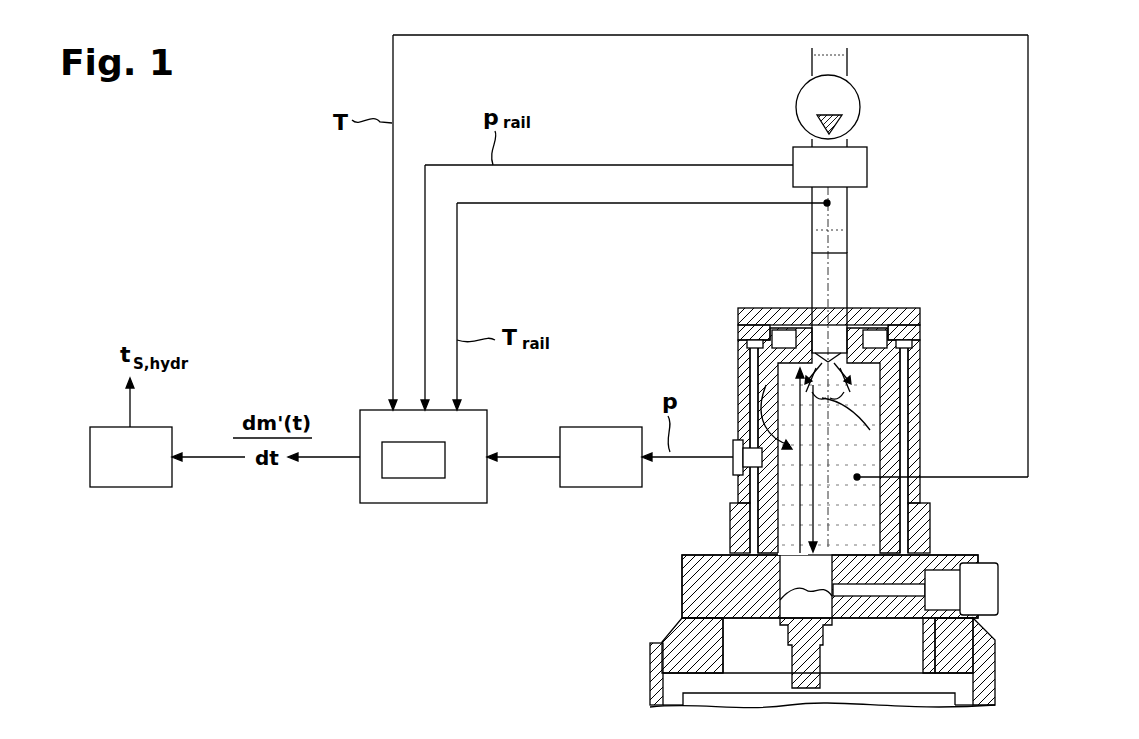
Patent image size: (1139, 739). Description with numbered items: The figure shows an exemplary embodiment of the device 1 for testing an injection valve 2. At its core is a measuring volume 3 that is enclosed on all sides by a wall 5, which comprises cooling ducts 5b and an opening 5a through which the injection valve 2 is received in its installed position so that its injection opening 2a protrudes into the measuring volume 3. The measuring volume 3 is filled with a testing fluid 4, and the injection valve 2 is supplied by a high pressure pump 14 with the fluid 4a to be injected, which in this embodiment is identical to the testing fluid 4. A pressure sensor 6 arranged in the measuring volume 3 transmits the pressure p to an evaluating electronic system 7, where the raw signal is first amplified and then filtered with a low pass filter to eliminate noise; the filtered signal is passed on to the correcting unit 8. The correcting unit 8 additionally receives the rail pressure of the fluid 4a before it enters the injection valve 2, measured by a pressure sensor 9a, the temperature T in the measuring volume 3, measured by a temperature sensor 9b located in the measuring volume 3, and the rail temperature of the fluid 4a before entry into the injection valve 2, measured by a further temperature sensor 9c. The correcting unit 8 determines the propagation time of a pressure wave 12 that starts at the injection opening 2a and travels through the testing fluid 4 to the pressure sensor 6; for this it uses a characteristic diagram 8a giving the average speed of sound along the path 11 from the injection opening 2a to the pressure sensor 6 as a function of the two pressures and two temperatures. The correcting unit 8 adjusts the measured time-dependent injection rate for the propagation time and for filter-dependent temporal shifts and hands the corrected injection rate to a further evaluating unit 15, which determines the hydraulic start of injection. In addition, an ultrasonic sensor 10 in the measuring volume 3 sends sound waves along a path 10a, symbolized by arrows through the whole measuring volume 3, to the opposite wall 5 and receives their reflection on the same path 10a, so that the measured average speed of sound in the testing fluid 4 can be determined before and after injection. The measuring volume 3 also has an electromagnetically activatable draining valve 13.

The device 1 is at (1048, 166).
The injection valve 2 is at (848, 270).
The injection opening 2a is at (824, 360).
The measuring volume 3 is at (885, 443).
The testing fluid 4 is at (835, 220).
The fluid to be injected 4a is at (850, 64).
The wall 5 is at (920, 317).
The opening 5a is at (858, 340).
The cooling ducts 5b is at (920, 532).
The pressure sensor 6 is at (748, 458).
The evaluating electronic system 7 is at (590, 487).
The correcting unit 8 is at (467, 503).
The characteristic diagram 8a is at (413, 478).
The pressure sensor 9a is at (867, 168).
The temperature sensor 9b is at (858, 480).
The further temperature sensor 9c is at (826, 206).
The ultrasonic sensor 10 is at (797, 600).
The path 10a is at (796, 510).
The path 11 is at (752, 355).
The pressure wave 12 is at (850, 430).
The draining valve 13 is at (990, 592).
The high pressure pump 14 is at (860, 108).
The further evaluating unit 15 is at (130, 487).